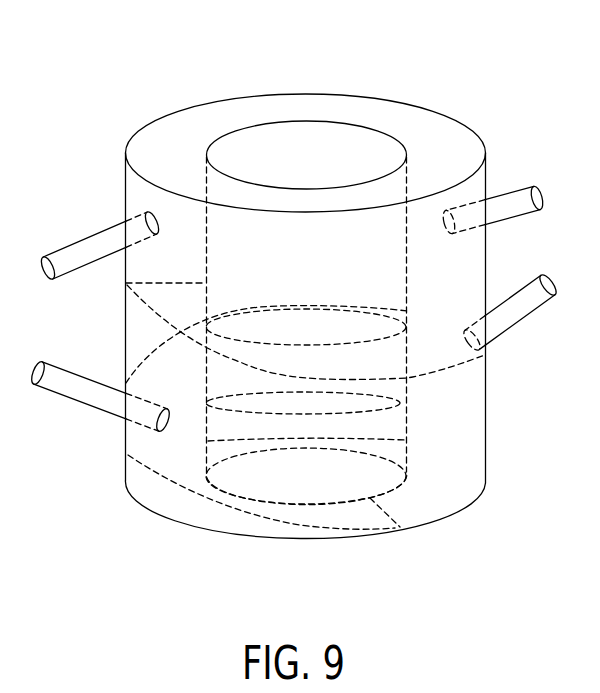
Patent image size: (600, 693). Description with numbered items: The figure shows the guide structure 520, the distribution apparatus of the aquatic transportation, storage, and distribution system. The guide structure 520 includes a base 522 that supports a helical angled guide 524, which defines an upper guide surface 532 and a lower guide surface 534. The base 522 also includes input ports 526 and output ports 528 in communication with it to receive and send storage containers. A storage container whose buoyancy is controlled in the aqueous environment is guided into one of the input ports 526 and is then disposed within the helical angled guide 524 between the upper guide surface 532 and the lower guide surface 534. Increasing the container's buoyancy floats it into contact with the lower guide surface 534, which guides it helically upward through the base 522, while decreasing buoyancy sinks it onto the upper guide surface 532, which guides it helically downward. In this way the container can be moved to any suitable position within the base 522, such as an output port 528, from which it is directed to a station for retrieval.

The guide structure 520 is at (294, 316).
The base 522 is at (305, 289).
The helical angled guide 524 is at (329, 281).
The input ports 526 is at (294, 377).
The output ports 528 is at (298, 195).
The upper guide surface 532 is at (338, 427).
The lower guide surface 534 is at (335, 484).